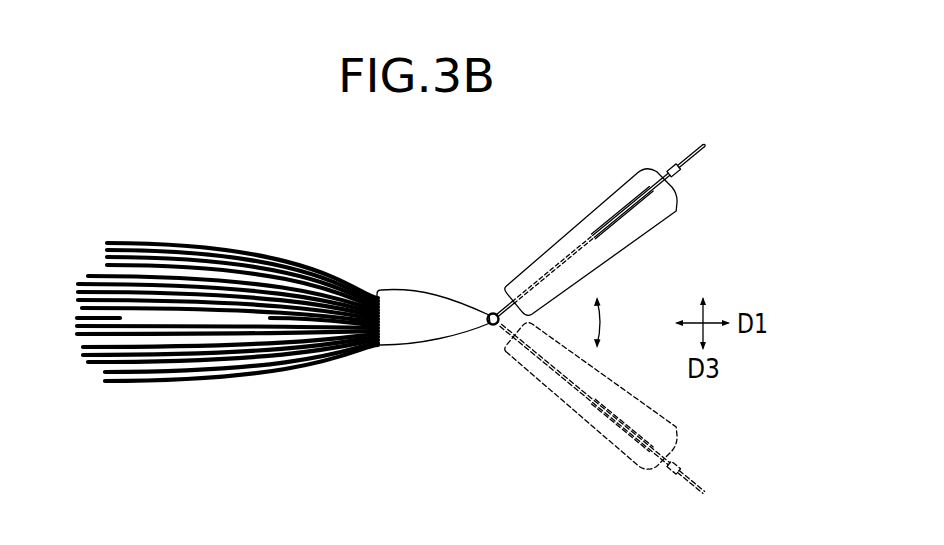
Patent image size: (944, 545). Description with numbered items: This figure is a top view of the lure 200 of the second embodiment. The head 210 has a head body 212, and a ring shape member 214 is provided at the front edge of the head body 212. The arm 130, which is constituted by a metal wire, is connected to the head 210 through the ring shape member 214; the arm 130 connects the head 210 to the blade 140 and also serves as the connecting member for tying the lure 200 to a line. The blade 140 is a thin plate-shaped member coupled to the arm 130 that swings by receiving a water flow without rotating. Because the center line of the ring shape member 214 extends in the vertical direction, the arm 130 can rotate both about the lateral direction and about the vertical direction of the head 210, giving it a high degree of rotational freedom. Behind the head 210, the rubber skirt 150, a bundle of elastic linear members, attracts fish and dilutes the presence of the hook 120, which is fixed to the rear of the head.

The hook 120 is at (158, 322).
The arm 130 is at (685, 181).
The blade 140 is at (593, 206).
The rubber skirt 150 is at (268, 391).
The lure 200 is at (609, 139).
The head 210 is at (401, 276).
The head body 212 is at (435, 332).
The ring shape member 214 is at (492, 313).